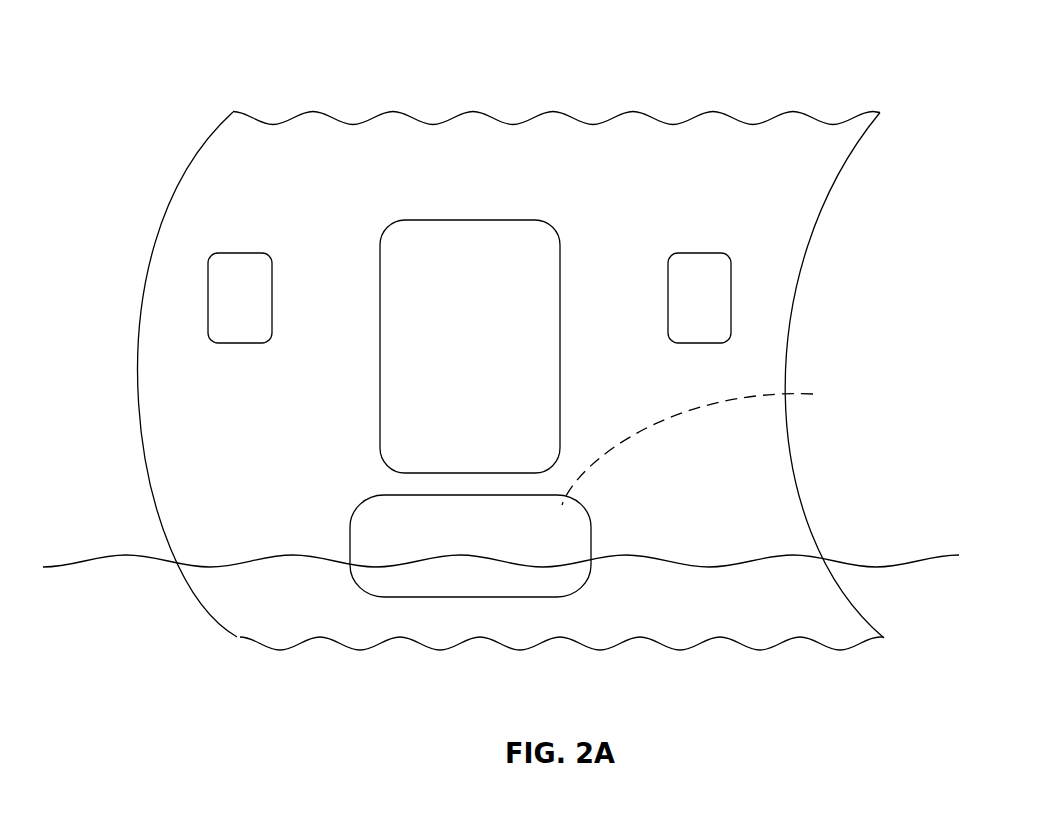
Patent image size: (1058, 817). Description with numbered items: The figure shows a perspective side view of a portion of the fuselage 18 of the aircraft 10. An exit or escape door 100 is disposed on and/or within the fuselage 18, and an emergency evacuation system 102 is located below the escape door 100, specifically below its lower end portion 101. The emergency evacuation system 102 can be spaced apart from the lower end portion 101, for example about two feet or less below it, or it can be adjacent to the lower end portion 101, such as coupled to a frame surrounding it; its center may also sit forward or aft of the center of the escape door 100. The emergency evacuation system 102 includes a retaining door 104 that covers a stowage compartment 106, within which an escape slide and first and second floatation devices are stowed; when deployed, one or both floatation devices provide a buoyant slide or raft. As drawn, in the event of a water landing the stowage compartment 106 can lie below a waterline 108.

The aircraft 10 is at (511, 337).
The fuselage 18 is at (298, 148).
The escape door 100 is at (510, 218).
The lower end portion 101 is at (326, 260).
The emergency evacuation system 102 is at (606, 509).
The retaining door 104 is at (590, 541).
The stowage compartment 106 is at (714, 440).
The waterline 108 is at (868, 562).